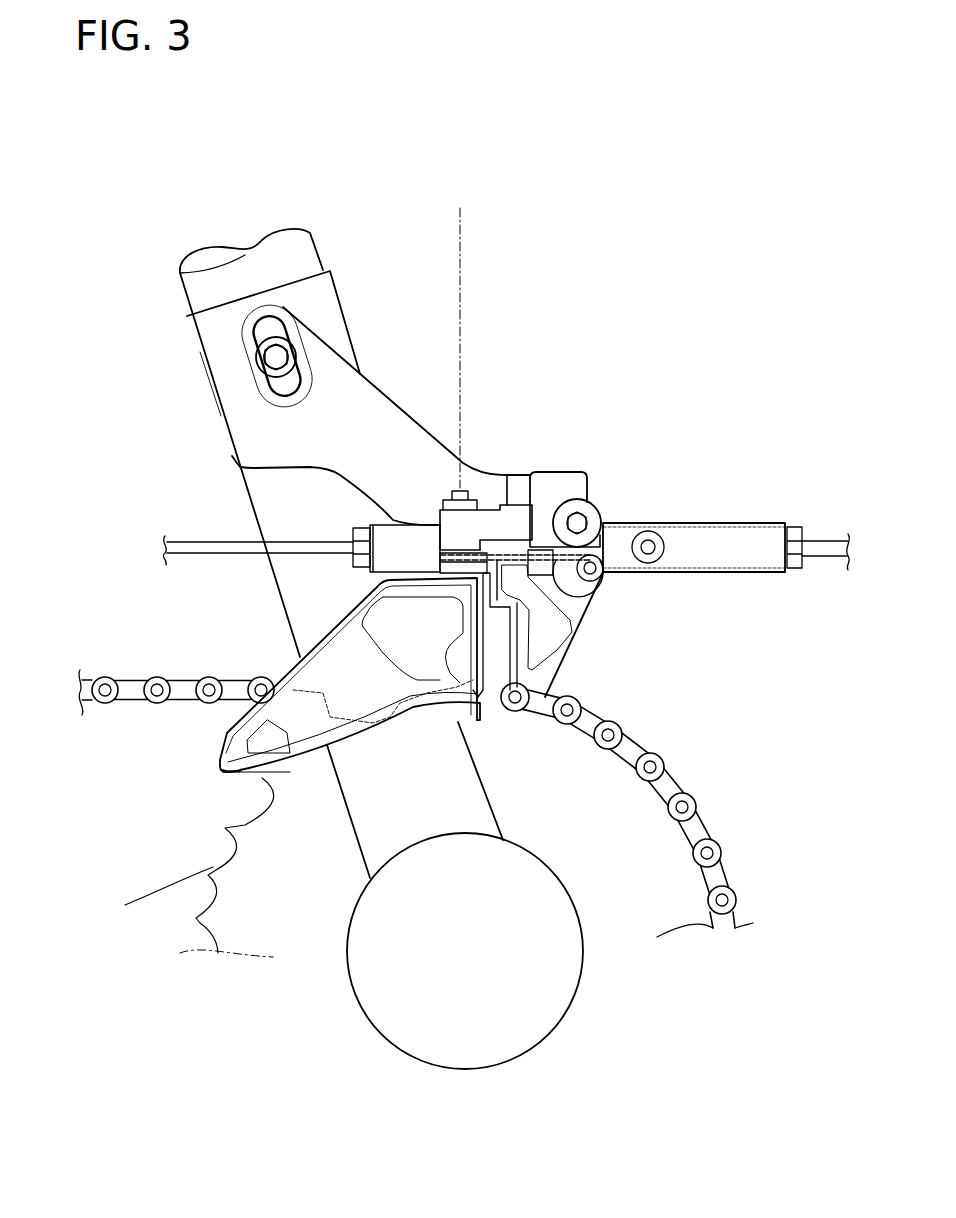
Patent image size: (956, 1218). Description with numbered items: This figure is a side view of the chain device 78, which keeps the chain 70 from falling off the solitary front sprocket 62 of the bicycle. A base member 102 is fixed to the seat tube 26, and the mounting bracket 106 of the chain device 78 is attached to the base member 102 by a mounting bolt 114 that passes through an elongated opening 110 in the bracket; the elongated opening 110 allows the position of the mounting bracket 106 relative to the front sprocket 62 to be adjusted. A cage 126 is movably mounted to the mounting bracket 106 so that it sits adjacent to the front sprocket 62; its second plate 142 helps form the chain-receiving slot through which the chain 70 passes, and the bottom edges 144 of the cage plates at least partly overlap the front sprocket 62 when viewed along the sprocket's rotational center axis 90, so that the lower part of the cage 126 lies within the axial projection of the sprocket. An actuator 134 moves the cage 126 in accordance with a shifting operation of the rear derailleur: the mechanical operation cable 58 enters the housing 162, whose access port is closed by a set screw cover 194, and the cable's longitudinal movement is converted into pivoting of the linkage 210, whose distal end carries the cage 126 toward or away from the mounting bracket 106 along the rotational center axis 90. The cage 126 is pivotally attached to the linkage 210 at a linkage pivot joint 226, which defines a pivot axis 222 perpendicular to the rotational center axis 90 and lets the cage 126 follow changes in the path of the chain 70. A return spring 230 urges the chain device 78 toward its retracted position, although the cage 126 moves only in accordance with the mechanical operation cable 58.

The seat tube 26 is at (197, 292).
The mechanical operation cable 58 is at (180, 548).
The front sprocket 62 is at (200, 925).
The chain 70 is at (133, 700).
The chain device 78 is at (605, 247).
The rotational center axis 90 is at (468, 955).
The base member 102 is at (320, 307).
The mounting bracket 106 is at (353, 417).
The elongated opening 110 is at (275, 400).
The mounting bolt 114 is at (276, 358).
The cage 126 is at (217, 762).
The actuator 134 is at (628, 445).
The second plate 142 is at (300, 675).
The bottom edges 144 is at (397, 723).
The housing 162 is at (702, 540).
The set screw cover 194 is at (652, 557).
The linkage 210 is at (480, 525).
The pivot axis 222 is at (460, 227).
The linkage pivot joint 226 is at (443, 503).
The return spring 230 is at (550, 626).